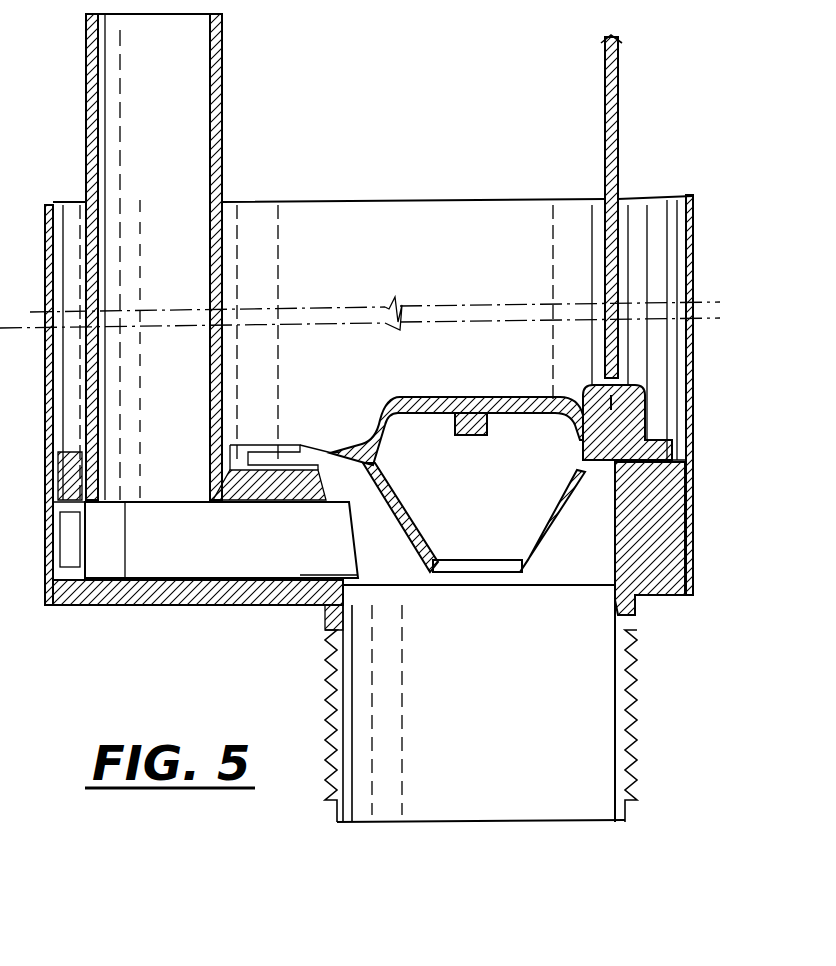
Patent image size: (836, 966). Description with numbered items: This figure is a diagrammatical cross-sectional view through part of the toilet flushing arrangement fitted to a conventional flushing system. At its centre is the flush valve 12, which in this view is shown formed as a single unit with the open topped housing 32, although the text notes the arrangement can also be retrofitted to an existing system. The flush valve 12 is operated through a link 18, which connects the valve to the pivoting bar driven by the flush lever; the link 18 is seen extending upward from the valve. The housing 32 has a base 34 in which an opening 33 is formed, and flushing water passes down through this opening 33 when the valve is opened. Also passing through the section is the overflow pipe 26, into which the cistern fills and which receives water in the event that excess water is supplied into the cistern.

The flush valve 12 is at (570, 500).
The link 18 is at (608, 138).
The overflow pipe 26 is at (222, 143).
The housing 32 is at (688, 265).
The opening 33 is at (567, 588).
The base 34 is at (232, 605).